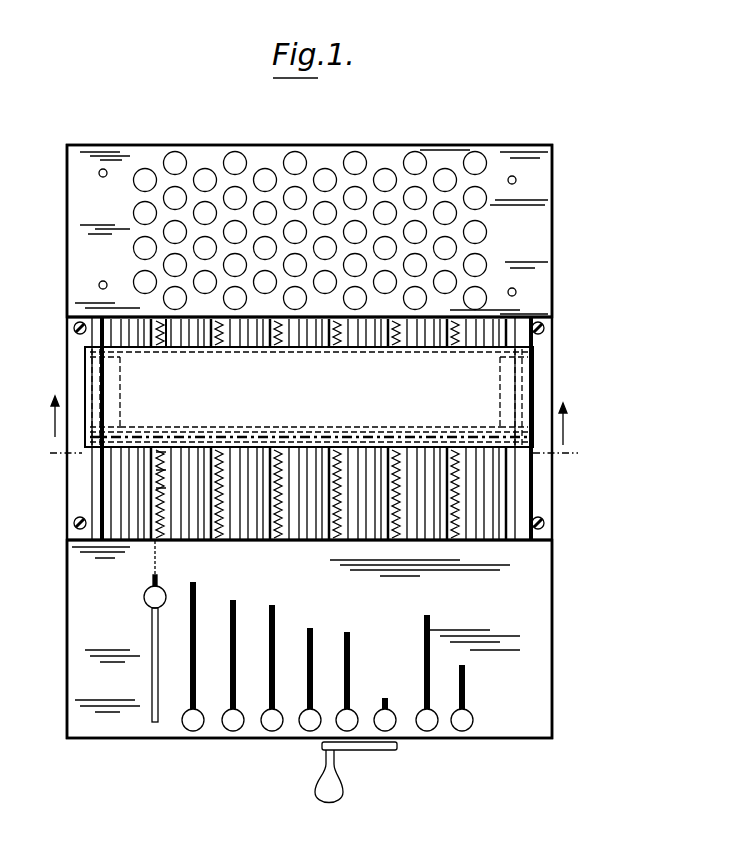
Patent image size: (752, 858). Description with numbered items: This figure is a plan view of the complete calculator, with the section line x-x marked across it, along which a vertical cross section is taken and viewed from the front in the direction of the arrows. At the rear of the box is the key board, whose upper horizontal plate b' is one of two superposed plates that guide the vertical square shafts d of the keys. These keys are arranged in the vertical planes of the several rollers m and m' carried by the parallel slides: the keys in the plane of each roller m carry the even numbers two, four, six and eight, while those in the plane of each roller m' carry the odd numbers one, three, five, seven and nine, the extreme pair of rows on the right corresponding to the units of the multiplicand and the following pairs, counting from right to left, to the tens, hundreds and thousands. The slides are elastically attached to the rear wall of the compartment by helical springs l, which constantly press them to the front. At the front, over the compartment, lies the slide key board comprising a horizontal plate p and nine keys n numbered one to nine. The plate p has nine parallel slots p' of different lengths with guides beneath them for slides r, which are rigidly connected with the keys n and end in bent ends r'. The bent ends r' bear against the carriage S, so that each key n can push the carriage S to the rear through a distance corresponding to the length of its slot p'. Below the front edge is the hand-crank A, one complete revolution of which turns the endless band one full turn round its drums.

The vertical square shaft d is at (175, 152).
The upper horizontal plate b' is at (296, 231).
The roller m is at (308, 333).
The roller m' is at (179, 350).
The slide r is at (277, 494).
The bent end r' is at (160, 494).
The helical spring l is at (457, 491).
The carriage S is at (309, 397).
The section line x- x is at (308, 432).
The horizontal plate p is at (309, 639).
The key n is at (145, 591).
The slot p' is at (308, 631).
The hand-crank A is at (343, 781).